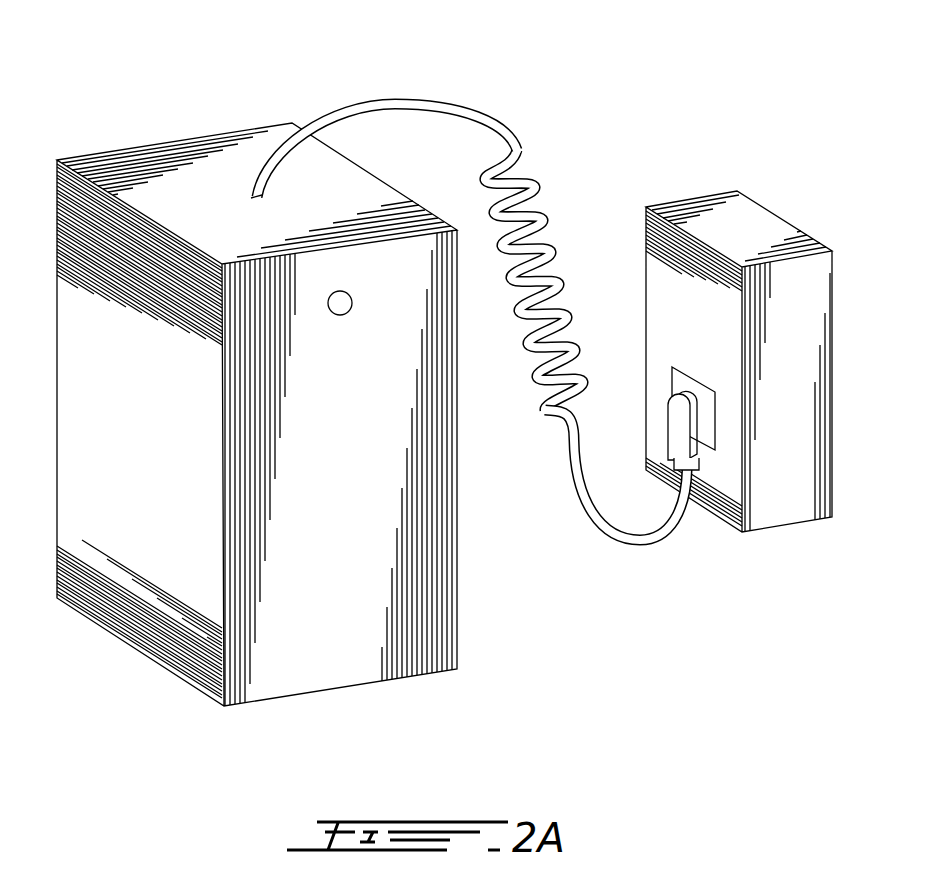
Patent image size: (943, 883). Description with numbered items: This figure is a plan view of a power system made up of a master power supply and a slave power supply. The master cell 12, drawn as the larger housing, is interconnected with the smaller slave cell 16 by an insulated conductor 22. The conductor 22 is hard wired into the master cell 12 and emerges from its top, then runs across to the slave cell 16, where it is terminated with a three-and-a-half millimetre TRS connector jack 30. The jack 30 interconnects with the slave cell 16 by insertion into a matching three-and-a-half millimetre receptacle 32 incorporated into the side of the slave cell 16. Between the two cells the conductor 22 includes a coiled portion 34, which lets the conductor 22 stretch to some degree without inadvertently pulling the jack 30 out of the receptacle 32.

The master cell 12 is at (102, 290).
The slave cell 16 is at (760, 225).
The insulated conductor 22 is at (412, 100).
The TRS connector jack 30 is at (683, 437).
The receptacle 32 is at (683, 380).
The coiled portion 34 is at (545, 247).